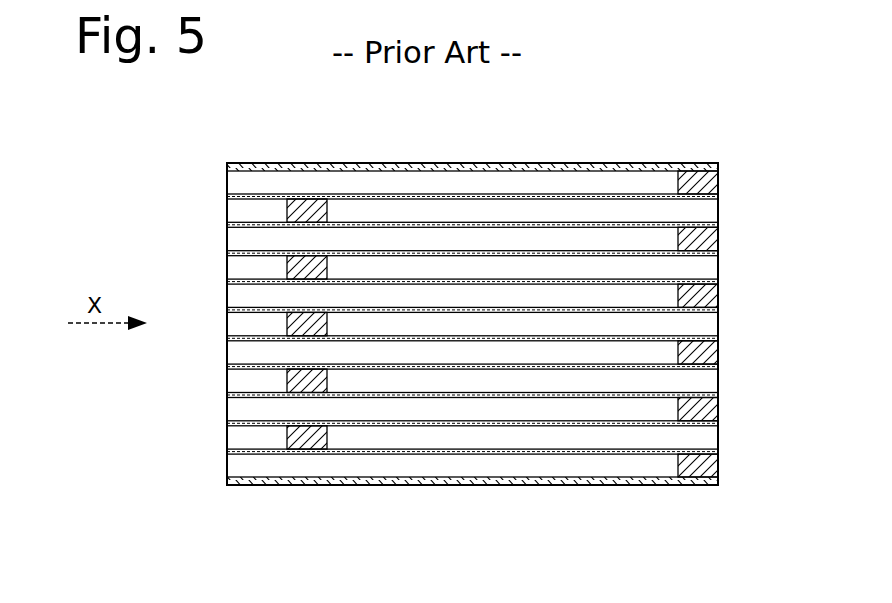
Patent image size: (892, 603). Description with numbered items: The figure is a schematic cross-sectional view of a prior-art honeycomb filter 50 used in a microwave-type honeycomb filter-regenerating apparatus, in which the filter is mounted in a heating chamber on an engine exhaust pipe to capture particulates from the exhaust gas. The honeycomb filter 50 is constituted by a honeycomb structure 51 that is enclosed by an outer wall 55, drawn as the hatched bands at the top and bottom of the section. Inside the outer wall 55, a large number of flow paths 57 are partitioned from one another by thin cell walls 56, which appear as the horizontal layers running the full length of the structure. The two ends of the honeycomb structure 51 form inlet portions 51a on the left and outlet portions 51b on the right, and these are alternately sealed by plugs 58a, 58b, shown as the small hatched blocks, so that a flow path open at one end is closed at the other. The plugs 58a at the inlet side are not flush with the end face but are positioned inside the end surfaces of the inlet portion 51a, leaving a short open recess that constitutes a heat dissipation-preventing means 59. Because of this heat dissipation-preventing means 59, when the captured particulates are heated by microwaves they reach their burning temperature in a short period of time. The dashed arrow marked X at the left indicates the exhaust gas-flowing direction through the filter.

The honeycomb filter 50 is at (191, 146).
The honeycomb structure 51 is at (467, 156).
The inlet portion 51a is at (227, 437).
The outlet portion 51b is at (720, 437).
The outer wall 55 is at (623, 168).
The cell wall 56 is at (252, 223).
The flow path 57 is at (243, 240).
The plug 58a is at (308, 438).
The plug 58b is at (710, 470).
The heat dissipation-preventing means 59 is at (263, 207).